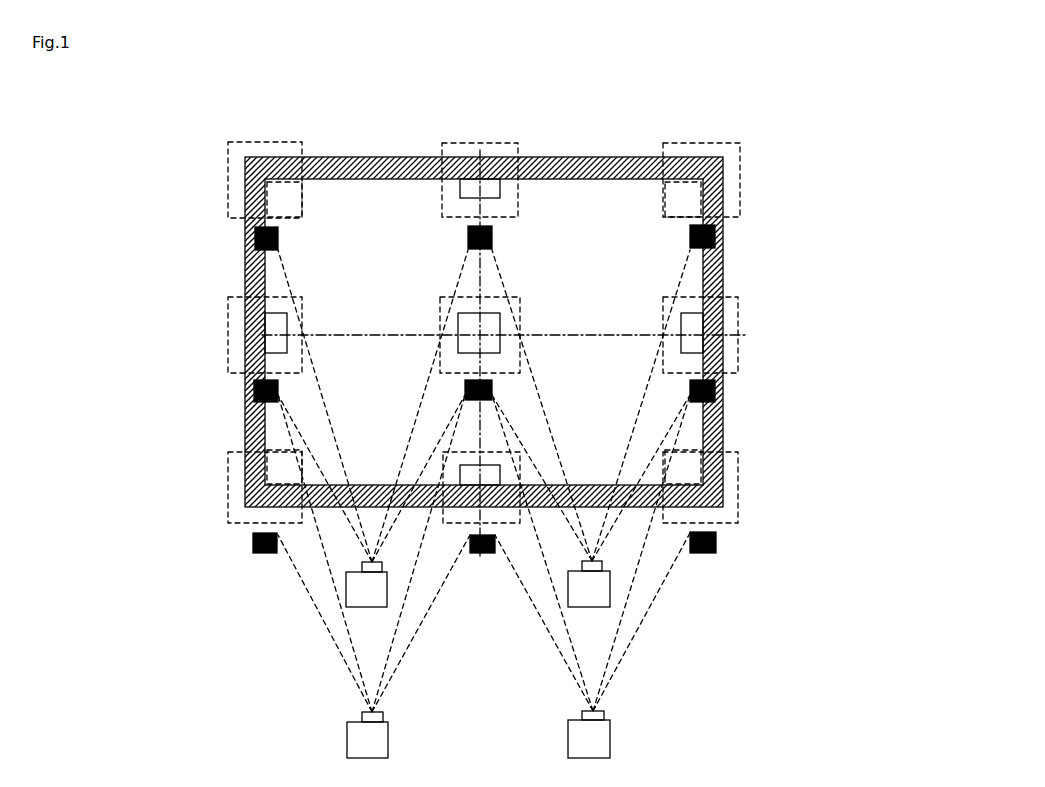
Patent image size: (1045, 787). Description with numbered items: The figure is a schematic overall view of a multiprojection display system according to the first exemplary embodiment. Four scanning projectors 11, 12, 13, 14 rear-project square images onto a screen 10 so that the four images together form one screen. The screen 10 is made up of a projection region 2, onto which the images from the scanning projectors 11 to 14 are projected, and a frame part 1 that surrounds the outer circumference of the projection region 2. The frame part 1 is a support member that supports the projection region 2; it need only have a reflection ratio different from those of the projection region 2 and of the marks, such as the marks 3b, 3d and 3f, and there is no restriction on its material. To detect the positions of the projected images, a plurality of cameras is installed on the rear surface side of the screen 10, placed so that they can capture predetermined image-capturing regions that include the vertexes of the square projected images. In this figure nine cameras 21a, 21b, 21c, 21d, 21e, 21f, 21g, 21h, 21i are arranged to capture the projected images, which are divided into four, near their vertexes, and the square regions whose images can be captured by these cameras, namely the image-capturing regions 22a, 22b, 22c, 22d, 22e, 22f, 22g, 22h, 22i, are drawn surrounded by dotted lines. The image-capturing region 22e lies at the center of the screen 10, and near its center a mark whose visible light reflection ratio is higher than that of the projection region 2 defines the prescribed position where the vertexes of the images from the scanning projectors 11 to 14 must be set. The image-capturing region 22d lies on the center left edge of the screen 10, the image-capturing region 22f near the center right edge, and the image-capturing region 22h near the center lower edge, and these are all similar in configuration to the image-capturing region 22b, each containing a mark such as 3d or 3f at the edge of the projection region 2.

The frame part 1 is at (723, 413).
The projection region 2 is at (615, 276).
The mark 3b is at (520, 179).
The mark 3d is at (264, 336).
The mark 3f is at (724, 312).
The screen 10 is at (637, 155).
The scanning projector 11 is at (362, 593).
The scanning projector 12 is at (602, 592).
The scanning projector 13 is at (360, 745).
The scanning projector 14 is at (600, 740).
The camera 21a is at (255, 239).
The camera 21b is at (468, 239).
The camera 21c is at (690, 237).
The camera 21d is at (255, 391).
The camera 21e is at (465, 391).
The camera 21f is at (716, 391).
The camera 21g is at (254, 545).
The camera 21h is at (482, 555).
The camera 21i is at (718, 544).
The image-capturing region 22a is at (232, 152).
The image-capturing region 22b is at (446, 152).
The image-capturing region 22c is at (735, 158).
The image-capturing region 22d is at (229, 298).
The image-capturing region 22e is at (494, 298).
The image-capturing region 22f is at (740, 336).
The image-capturing region 22g is at (230, 490).
The image-capturing region 22h is at (492, 447).
The image-capturing region 22i is at (740, 491).